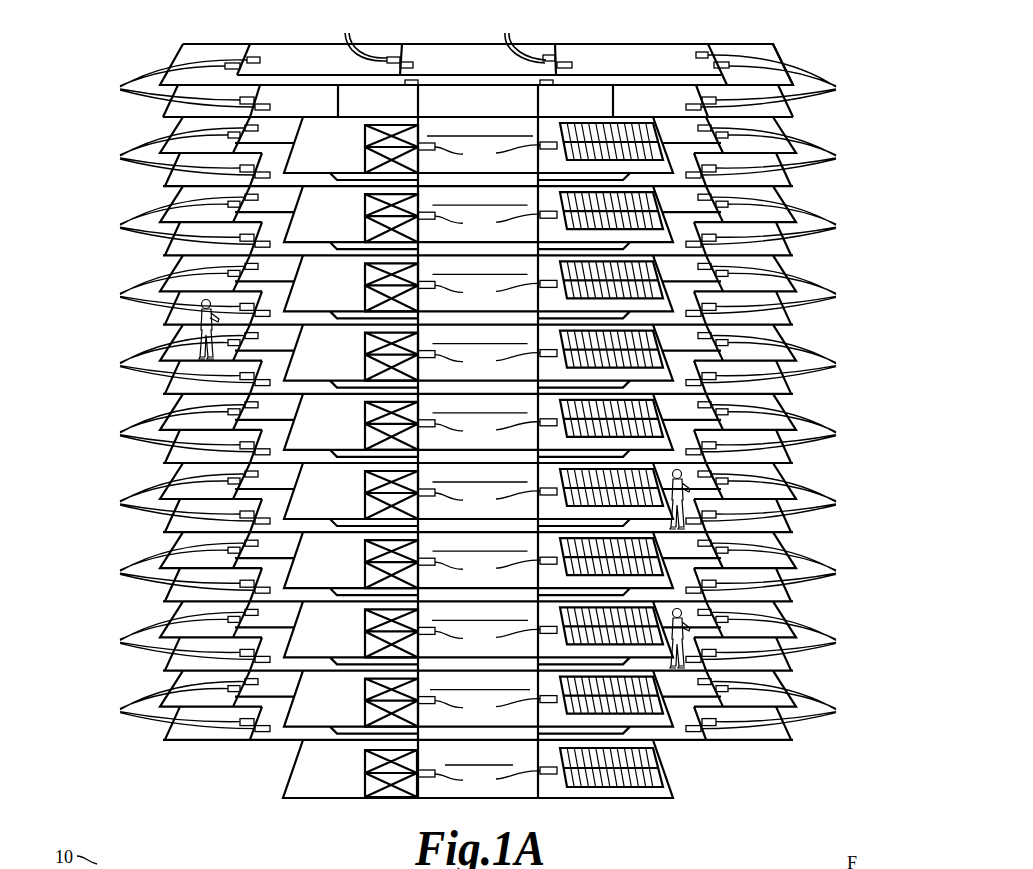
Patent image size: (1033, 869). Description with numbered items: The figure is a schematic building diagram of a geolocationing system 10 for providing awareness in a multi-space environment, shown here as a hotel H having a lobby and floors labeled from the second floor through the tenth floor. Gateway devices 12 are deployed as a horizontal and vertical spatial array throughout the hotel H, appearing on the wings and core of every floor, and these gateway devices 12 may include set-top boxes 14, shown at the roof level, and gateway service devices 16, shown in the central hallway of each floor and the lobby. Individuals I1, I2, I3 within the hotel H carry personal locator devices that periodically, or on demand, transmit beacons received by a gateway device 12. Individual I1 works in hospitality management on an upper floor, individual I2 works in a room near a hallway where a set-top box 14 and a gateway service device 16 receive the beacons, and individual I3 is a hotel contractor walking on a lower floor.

The geolocationing system 10 is at (94, 114).
The gateway device 12 is at (478, 373).
The set-top box 14 is at (540, 83).
The gateway service device 16 is at (487, 467).
The hotel H is at (794, 33).
The individual I1 is at (178, 328).
The individual I2 is at (745, 527).
The individual I3 is at (745, 666).